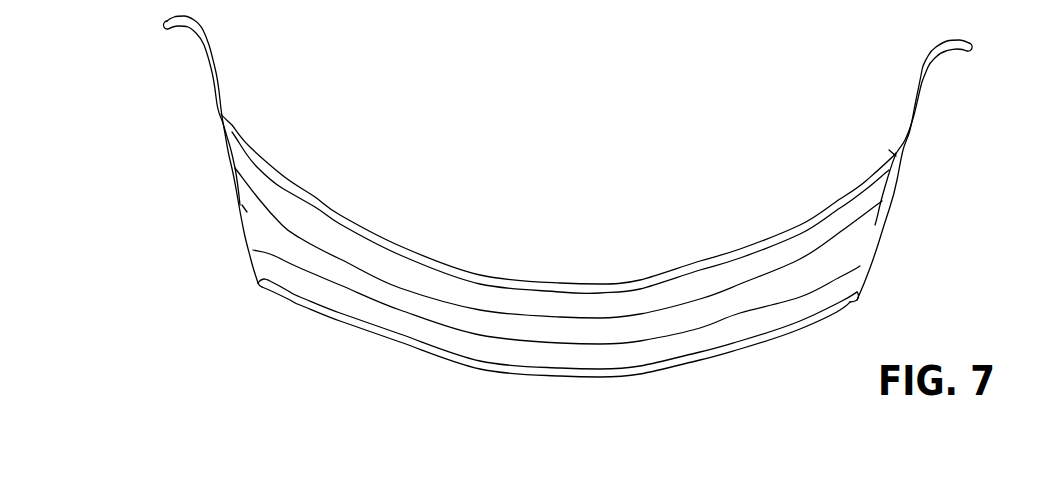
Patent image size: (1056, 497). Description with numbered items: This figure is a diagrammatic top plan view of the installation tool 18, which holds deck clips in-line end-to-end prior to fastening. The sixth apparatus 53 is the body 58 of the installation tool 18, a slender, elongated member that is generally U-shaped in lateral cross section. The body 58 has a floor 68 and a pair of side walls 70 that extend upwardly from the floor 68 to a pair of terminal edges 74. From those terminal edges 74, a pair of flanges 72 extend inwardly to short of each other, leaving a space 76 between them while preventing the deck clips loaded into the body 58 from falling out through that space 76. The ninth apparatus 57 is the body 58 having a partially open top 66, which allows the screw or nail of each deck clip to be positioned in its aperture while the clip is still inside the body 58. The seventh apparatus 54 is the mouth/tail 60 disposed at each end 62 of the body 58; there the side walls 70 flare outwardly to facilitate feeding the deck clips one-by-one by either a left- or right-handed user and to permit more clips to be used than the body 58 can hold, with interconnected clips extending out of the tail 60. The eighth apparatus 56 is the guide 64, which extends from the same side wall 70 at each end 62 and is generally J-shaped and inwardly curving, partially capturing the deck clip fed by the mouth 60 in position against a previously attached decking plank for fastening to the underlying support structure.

The installation tool 18 is at (305, 196).
The sixth apparatus 53 is at (452, 219).
The body 58 is at (447, 263).
The seventh apparatus 54 is at (567, 212).
The mouth/tail 60 is at (243, 226).
The eighth apparatus 56 is at (567, 151).
The guide 64 is at (216, 67).
The ninth apparatus 57 is at (240, 206).
The end 62 is at (245, 237).
The partially open top 66 is at (757, 292).
The floor 68 is at (653, 323).
The side walls 70 is at (373, 237).
The flanges 72 is at (620, 302).
The terminal edges 74 is at (537, 292).
The space 76 is at (448, 312).